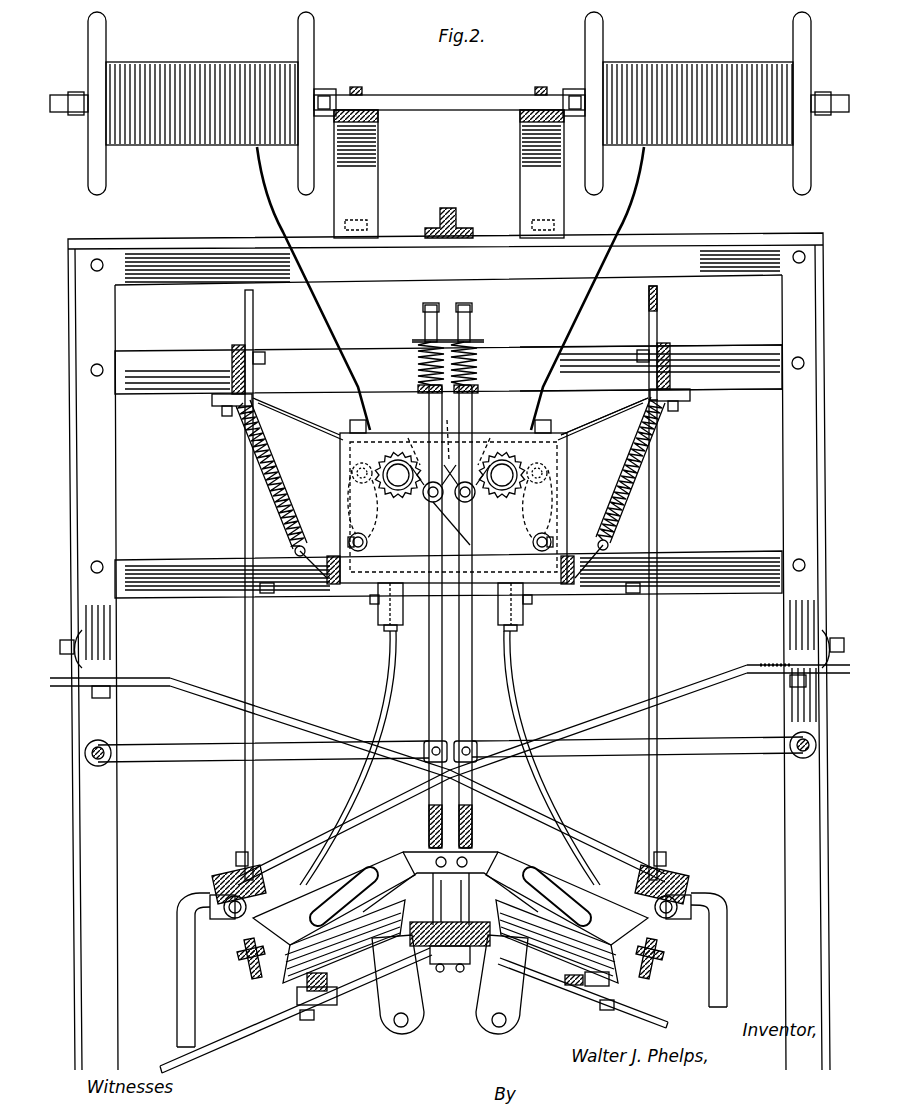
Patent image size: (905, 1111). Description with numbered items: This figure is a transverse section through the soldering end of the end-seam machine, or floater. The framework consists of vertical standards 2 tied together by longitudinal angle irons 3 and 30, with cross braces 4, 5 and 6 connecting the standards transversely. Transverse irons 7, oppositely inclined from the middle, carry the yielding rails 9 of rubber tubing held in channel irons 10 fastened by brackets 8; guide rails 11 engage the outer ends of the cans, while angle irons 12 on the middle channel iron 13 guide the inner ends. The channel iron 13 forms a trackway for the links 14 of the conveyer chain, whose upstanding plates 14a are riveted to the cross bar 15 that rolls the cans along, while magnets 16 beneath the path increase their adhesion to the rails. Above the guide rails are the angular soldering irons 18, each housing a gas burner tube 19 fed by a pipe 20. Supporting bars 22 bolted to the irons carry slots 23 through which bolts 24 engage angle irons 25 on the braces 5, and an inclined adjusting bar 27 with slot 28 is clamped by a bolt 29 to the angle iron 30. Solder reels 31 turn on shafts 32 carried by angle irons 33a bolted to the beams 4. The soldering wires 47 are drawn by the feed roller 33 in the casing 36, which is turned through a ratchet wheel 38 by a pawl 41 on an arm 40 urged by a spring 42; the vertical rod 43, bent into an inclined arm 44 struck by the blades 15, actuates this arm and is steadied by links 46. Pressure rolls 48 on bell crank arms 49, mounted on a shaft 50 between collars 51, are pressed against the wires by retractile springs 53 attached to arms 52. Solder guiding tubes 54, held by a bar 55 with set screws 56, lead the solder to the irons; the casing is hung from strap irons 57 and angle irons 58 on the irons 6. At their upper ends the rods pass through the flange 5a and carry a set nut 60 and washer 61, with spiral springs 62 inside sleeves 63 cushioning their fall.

The vertical standards 2 is at (172, 486).
The longitudinal angle iron 3 is at (456, 212).
The cross brace 4 is at (190, 272).
The cross brace 5 is at (160, 394).
The strap iron flange 5a is at (588, 388).
The cross brace 6 is at (218, 598).
The transverse irons 7 is at (228, 1040).
The brackets 8 is at (297, 996).
The yielding rails 9 is at (584, 1008).
The channel irons 10 is at (327, 990).
The longitudinal guide rails 11 is at (246, 968).
The angle irons 12 is at (398, 895).
The middle channel iron 13 is at (445, 964).
The conveyer chain links 14 is at (468, 950).
The upstanding plates 14a is at (470, 868).
The cross bar 15 is at (418, 850).
The magnets 16 is at (424, 1022).
The soldering irons 18 is at (258, 866).
The gas burner tube 19 is at (236, 918).
The pipe 20 is at (177, 994).
The supporting bars 22 is at (253, 664).
The slot 23 is at (657, 318).
The bolt 24 is at (265, 356).
The angle iron 25 is at (237, 348).
The adjusting bar 27 is at (322, 738).
The slot 28 is at (760, 676).
The bolt 29 is at (110, 694).
The longitudinal angle iron 30 is at (84, 646).
The solder-containing reels 31 is at (316, 42).
The shafts 32 is at (455, 95).
The feed roller 33 is at (450, 497).
The longitudinal angle irons 33a is at (378, 122).
The casing 36 is at (345, 448).
The ratchet wheel 38 is at (376, 470).
The arm 40 is at (470, 545).
The pawl 41 is at (420, 460).
The spring 42 is at (446, 431).
The vertical rod 43 is at (429, 680).
The inclined arm 44 is at (470, 800).
The links 46 is at (220, 762).
The soldering wires 47 is at (340, 332).
The pressure rolls 48 is at (352, 480).
The bell crank arm 49 is at (346, 504).
The shaft 50 is at (349, 540).
The collars 51 is at (358, 551).
The outwardly projecting arm 52 is at (334, 560).
The retractile spring 53 is at (246, 448).
The solder guiding tubes 54 is at (386, 680).
The bar 55 is at (384, 625).
The set screws 56 is at (370, 604).
The strap irons 57 is at (608, 414).
The longitudinal angle irons 58 is at (274, 593).
The set nut 60 is at (445, 318).
The washer 61 is at (420, 340).
The spiral springs 62 is at (418, 360).
The sleeve 63 is at (418, 380).